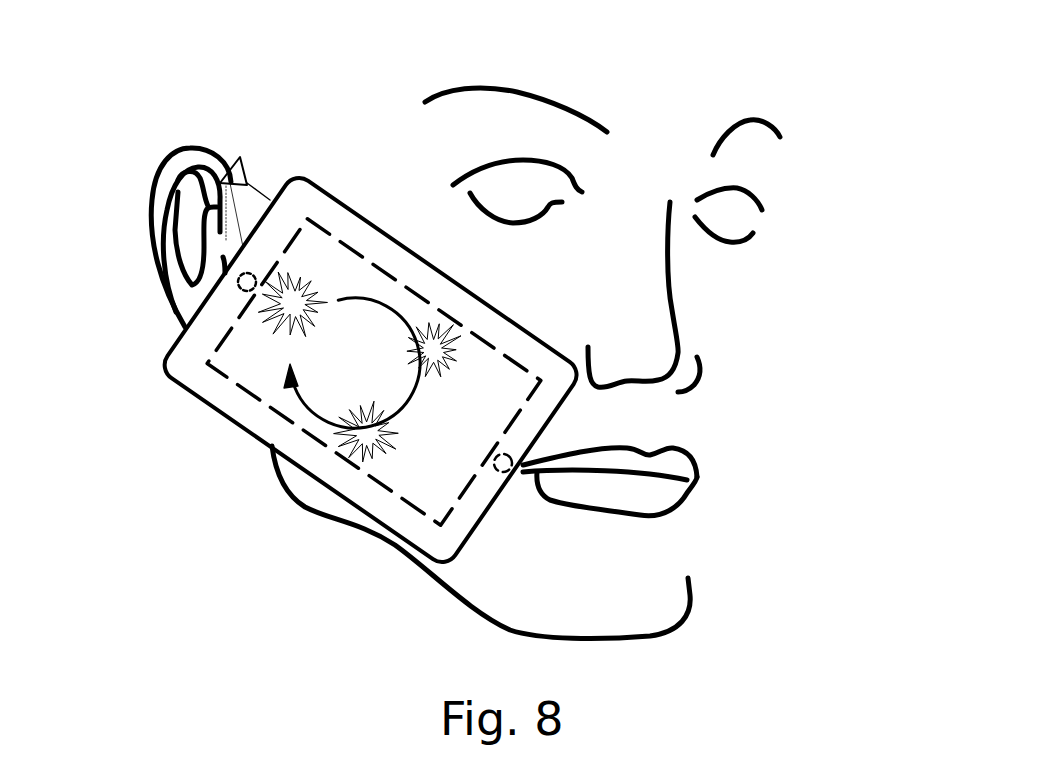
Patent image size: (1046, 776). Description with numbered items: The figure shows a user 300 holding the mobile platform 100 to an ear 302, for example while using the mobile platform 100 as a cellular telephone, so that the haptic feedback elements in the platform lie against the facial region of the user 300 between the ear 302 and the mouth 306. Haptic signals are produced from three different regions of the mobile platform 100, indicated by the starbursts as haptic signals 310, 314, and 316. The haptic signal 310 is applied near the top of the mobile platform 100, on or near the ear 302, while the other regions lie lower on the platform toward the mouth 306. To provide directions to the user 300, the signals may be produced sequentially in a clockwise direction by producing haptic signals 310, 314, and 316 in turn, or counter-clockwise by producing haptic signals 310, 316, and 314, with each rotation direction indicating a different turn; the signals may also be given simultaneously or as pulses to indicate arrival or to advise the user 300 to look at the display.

The user 300 is at (765, 67).
The ear 302 is at (148, 190).
The mobile platform 100 is at (163, 360).
The mouth 306 is at (687, 497).
The haptic signal 310 is at (283, 303).
The haptic signal 314 is at (463, 363).
The haptic signal 316 is at (347, 447).